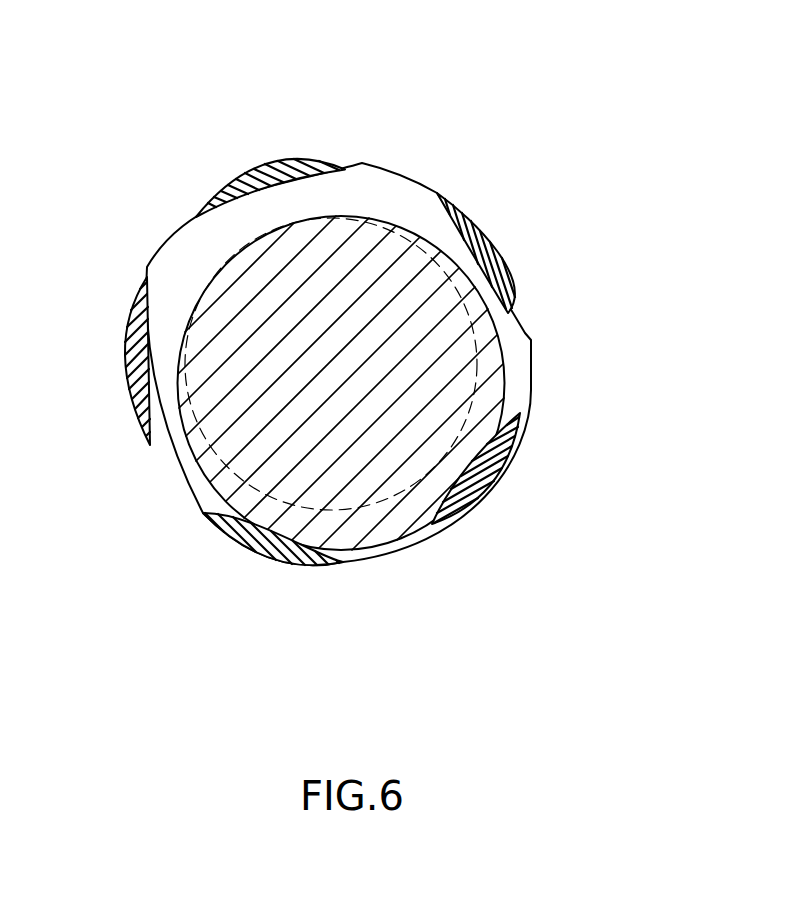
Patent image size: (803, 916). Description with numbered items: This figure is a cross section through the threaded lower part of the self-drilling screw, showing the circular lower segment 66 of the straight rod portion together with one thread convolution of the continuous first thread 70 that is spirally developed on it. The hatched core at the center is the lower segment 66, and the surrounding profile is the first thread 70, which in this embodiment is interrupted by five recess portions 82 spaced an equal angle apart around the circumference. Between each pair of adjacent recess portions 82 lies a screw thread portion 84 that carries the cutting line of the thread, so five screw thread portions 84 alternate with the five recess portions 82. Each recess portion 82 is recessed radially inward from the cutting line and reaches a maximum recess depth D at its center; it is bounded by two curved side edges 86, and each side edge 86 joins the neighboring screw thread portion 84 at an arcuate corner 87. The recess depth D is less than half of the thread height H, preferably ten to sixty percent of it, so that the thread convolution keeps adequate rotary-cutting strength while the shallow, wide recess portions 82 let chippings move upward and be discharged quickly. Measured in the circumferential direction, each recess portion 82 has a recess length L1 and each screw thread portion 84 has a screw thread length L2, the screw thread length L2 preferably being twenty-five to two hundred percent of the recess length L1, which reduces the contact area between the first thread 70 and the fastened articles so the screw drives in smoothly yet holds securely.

The lower segment 66 is at (400, 440).
The first thread 70 is at (374, 558).
The recess portion 82 is at (445, 500).
The screw thread portion 84 is at (172, 473).
The curved side edge 86 is at (147, 433).
The arcuate corner 87 is at (147, 268).
The thread height H is at (263, 310).
The recess depth D is at (300, 257).
The recess length L1 is at (533, 334).
The screw thread length L2 is at (361, 158).